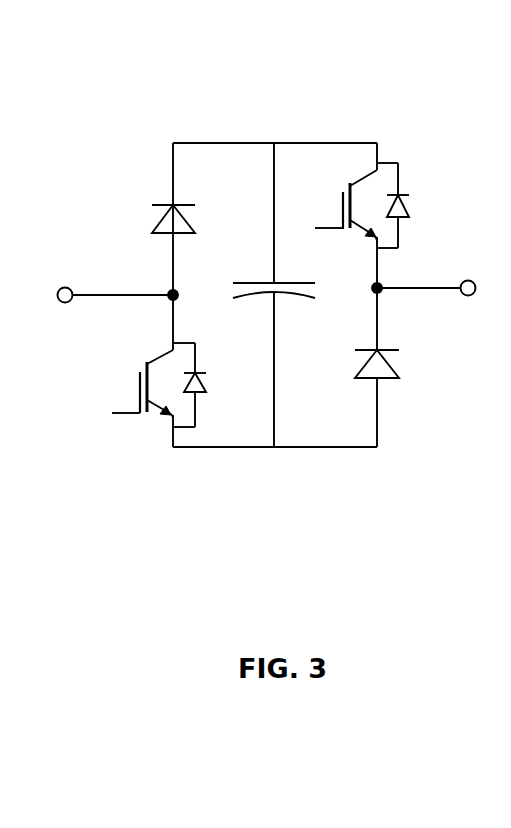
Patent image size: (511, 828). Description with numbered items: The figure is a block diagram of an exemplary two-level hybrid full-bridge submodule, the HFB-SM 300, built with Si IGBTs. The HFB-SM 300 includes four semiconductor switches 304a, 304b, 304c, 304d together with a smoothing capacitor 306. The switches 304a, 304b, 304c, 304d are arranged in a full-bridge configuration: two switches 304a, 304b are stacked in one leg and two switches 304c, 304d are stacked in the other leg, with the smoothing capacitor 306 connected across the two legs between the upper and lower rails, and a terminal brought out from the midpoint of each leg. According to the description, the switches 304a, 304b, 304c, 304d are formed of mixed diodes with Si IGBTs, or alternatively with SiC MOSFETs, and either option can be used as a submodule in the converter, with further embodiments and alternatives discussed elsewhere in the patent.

The hybrid full-bridge submodule (HFB-SM) 300 is at (272, 276).
The semiconductor switch 304a is at (147, 193).
The semiconductor switch 304b is at (132, 420).
The semiconductor switch 304c is at (412, 160).
The semiconductor switch 304d is at (397, 390).
The smoothing capacitor 306 is at (258, 265).